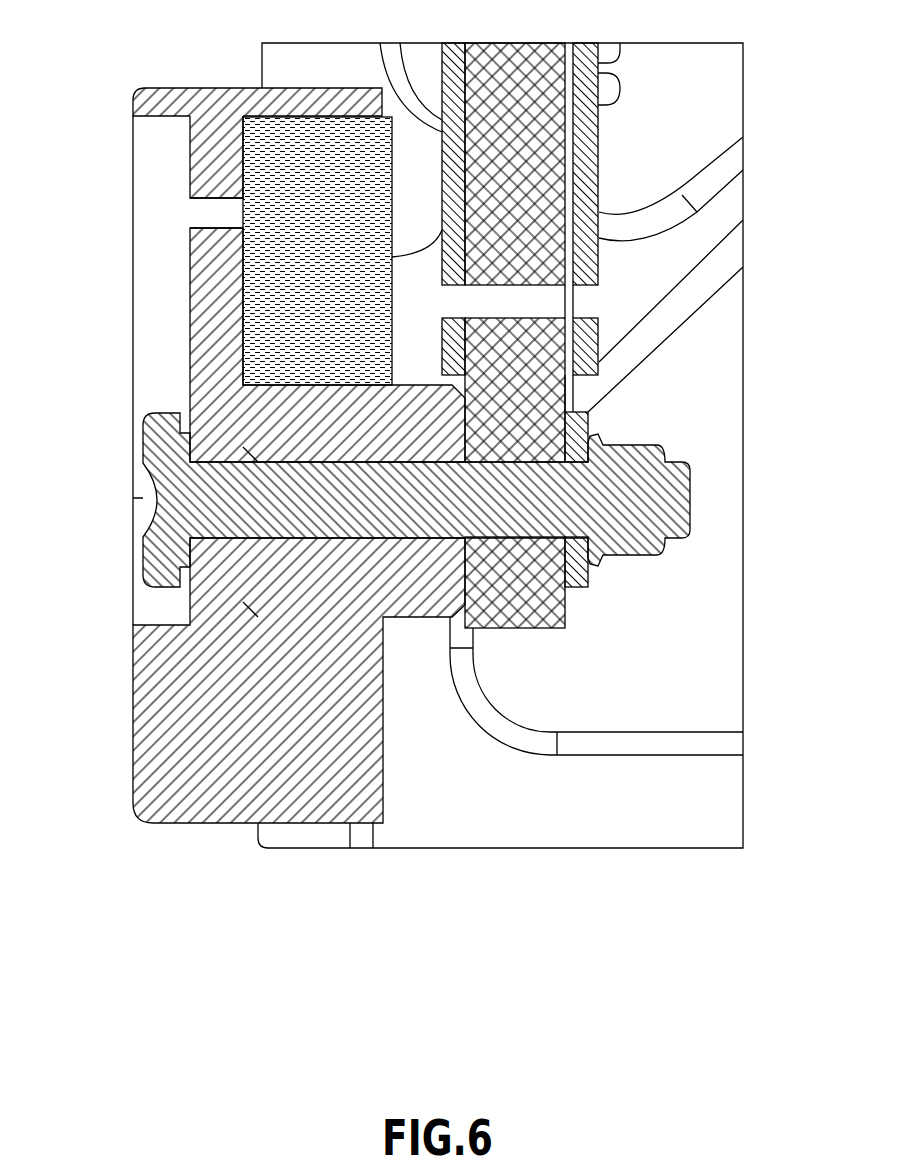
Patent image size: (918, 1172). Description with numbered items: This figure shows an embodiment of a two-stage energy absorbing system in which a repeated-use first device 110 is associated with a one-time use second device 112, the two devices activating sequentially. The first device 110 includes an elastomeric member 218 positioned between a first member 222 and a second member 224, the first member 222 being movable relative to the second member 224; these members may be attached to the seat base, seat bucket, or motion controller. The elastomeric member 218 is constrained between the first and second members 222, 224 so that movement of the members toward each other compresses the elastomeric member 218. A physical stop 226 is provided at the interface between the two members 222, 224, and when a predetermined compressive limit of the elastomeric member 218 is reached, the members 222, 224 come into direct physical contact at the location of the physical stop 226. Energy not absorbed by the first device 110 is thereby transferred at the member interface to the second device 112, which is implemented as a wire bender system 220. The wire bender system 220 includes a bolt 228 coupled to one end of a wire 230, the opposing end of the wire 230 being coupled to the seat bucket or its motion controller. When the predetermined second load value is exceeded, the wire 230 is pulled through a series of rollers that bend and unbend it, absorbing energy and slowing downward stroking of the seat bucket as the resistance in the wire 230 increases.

The first device 110 is at (240, 110).
The second device 112 is at (577, 607).
The elastomeric member 218 is at (262, 137).
The wire bender system 220 is at (577, 210).
The first member 222 is at (203, 153).
The second member 224 is at (203, 312).
The physical stop 226 is at (205, 217).
The bolt 228 is at (155, 443).
The wire 230 is at (537, 380).